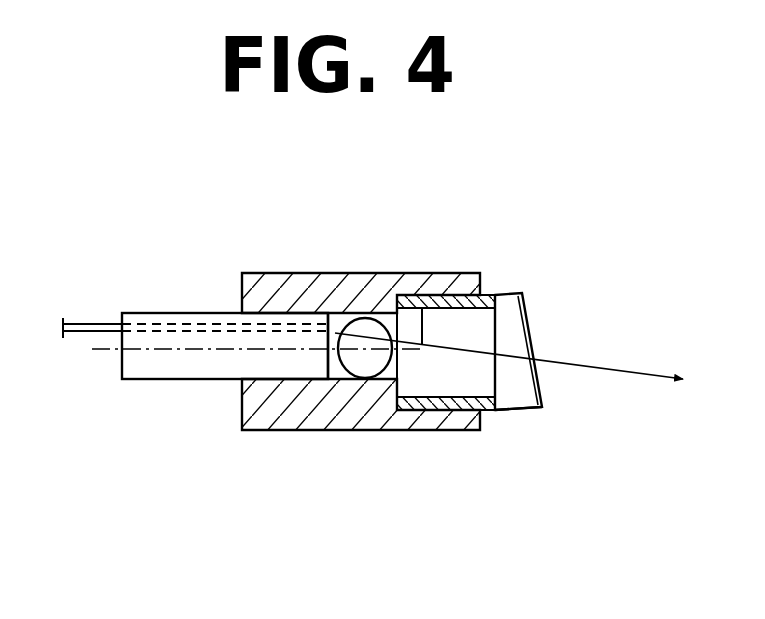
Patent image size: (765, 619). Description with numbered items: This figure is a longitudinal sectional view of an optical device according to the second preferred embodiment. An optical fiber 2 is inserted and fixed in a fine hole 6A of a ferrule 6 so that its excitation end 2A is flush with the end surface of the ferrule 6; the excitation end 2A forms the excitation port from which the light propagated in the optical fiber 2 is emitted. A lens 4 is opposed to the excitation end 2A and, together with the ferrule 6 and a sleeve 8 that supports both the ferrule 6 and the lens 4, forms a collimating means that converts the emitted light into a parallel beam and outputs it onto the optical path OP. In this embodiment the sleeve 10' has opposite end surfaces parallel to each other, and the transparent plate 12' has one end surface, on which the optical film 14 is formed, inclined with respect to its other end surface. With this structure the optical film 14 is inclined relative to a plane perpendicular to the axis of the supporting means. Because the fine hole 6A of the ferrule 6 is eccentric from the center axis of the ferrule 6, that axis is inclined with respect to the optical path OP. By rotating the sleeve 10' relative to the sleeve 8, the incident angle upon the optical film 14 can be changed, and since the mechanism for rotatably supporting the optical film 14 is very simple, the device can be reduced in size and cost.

The optical fiber 2 is at (85, 322).
The fine hole 6A is at (155, 323).
The ferrule 6 is at (157, 381).
The excitation end 2A is at (331, 312).
The sleeve 8 is at (278, 432).
The lens 4 is at (375, 372).
The optical path OP is at (418, 300).
The sleeve 10' is at (455, 281).
The transparent plate 12' is at (521, 453).
The optical film 14 is at (536, 302).